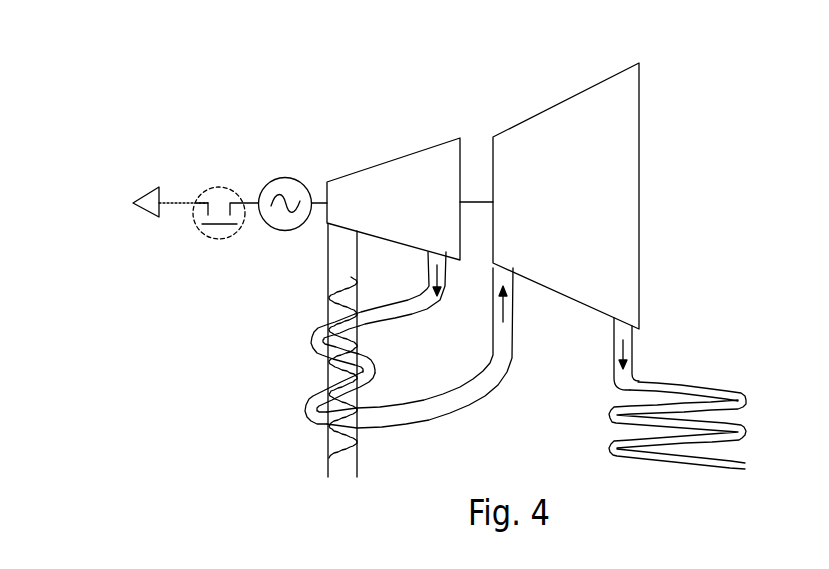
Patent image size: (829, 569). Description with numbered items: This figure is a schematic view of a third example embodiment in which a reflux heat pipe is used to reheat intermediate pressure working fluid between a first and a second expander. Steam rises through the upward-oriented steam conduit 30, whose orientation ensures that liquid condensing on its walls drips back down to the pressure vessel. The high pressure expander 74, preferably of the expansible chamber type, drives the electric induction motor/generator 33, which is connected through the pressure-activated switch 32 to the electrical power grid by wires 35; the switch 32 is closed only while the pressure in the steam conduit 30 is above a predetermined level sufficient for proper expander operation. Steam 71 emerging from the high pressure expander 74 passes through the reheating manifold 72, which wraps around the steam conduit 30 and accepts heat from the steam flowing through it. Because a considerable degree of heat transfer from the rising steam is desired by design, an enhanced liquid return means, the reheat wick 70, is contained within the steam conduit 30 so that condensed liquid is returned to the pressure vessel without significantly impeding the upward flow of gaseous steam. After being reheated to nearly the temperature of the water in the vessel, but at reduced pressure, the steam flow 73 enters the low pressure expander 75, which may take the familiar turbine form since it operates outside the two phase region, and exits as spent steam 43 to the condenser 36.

The steam conduit 30 is at (323, 461).
The pressure-activated switch 32 is at (211, 189).
The electric induction motor/generator 33 is at (279, 174).
The wires 35 is at (139, 192).
The condenser 36 is at (672, 382).
The spent steam 43 is at (617, 348).
The reheat wick 70 is at (328, 288).
The steam emerging from high pressure expander 71 is at (428, 276).
The reheating manifold 72 is at (322, 379).
The reheated steam flow 73 is at (500, 307).
The high pressure expander 74 is at (386, 159).
The low pressure expander 75 is at (538, 117).